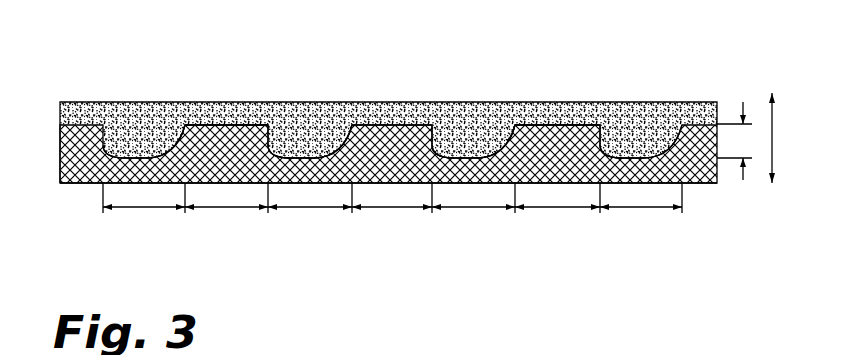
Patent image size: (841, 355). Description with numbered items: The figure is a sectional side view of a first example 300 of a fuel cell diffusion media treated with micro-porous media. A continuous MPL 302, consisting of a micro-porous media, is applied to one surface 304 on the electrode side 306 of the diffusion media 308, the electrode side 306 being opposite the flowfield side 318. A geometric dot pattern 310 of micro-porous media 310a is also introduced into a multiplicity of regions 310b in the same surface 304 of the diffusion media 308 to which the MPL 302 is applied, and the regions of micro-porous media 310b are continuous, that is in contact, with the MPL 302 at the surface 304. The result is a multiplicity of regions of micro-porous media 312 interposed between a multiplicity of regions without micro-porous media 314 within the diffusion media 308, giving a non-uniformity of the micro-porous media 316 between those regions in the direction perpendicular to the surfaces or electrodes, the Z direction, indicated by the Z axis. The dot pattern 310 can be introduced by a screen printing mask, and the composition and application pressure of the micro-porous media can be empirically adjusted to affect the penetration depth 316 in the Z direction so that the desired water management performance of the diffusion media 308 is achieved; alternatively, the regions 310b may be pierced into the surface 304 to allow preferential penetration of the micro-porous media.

The first example 300 is at (379, 133).
The continuous MPL 302 is at (60, 112).
The surface 304 is at (405, 124).
The electrode side 306 is at (340, 101).
The diffusion media 308 is at (60, 153).
The geometric dot pattern 310 is at (263, 148).
The micro-porous media 310a is at (247, 124).
The regions 310b is at (137, 158).
The regions of micro-porous media 312 is at (152, 208).
The regions without micro-porous media 314 is at (247, 208).
The penetration depth 316 is at (737, 141).
The flowfield side 318 is at (81, 184).
The Z direction Z is at (773, 113).